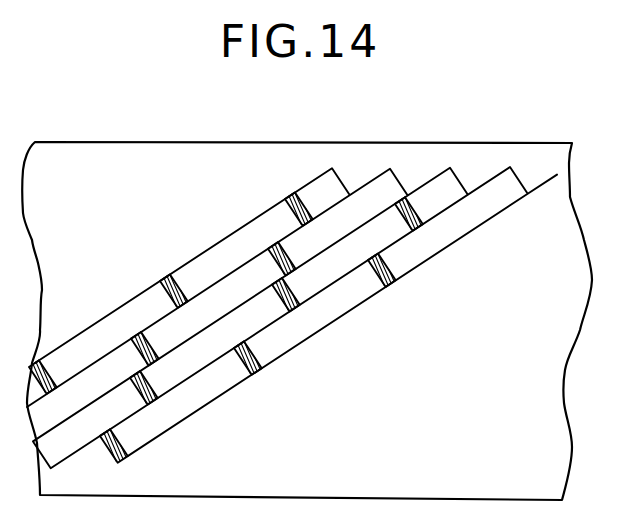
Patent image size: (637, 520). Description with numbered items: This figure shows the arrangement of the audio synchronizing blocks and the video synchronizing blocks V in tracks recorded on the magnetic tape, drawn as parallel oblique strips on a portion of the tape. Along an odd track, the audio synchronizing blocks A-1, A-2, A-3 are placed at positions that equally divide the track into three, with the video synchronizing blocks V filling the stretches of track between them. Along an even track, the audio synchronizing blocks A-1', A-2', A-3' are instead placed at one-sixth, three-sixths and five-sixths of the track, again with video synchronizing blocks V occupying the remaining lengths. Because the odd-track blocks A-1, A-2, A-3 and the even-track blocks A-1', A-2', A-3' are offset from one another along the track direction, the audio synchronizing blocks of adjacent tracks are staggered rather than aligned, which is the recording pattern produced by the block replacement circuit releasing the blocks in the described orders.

The audio synchronizing block A-1 is at (150, 461).
The audio synchronizing block A-1' is at (191, 416).
The audio synchronizing block A-2 is at (280, 375).
The audio synchronizing block A-2' is at (372, 317).
The audio synchronizing block A-3 is at (412, 288).
The audio synchronizing block A-3' is at (452, 242).
The video synchronizing block V is at (292, 317).